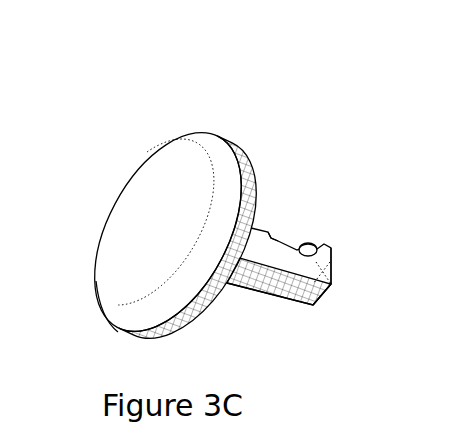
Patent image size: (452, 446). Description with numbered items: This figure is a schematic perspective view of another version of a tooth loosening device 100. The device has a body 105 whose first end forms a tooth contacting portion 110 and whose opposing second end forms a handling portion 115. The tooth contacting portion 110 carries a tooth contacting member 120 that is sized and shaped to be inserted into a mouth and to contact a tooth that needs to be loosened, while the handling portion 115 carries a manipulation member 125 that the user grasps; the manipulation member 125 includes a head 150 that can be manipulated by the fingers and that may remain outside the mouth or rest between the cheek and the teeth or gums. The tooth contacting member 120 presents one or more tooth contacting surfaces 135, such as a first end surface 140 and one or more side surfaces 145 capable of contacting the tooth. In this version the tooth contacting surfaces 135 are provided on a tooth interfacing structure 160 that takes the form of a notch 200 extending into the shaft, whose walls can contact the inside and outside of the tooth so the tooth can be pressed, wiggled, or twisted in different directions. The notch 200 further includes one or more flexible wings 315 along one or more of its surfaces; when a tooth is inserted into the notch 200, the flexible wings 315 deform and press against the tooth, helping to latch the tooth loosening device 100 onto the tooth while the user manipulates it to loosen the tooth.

The tooth loosening device 100 is at (253, 73).
The body 105 is at (273, 102).
The tooth contacting portion 110 is at (311, 147).
The handling portion 115 is at (127, 153).
The tooth contacting member 120 is at (293, 123).
The manipulation member 125 is at (102, 212).
The tooth contacting surfaces 135 is at (344, 250).
The first end surface 140 is at (338, 270).
The side surfaces 145 is at (322, 296).
The head 150 is at (96, 305).
The tooth interfacing structure 160 is at (284, 203).
The notch 200 is at (298, 173).
The flexible wings 315 is at (274, 239).